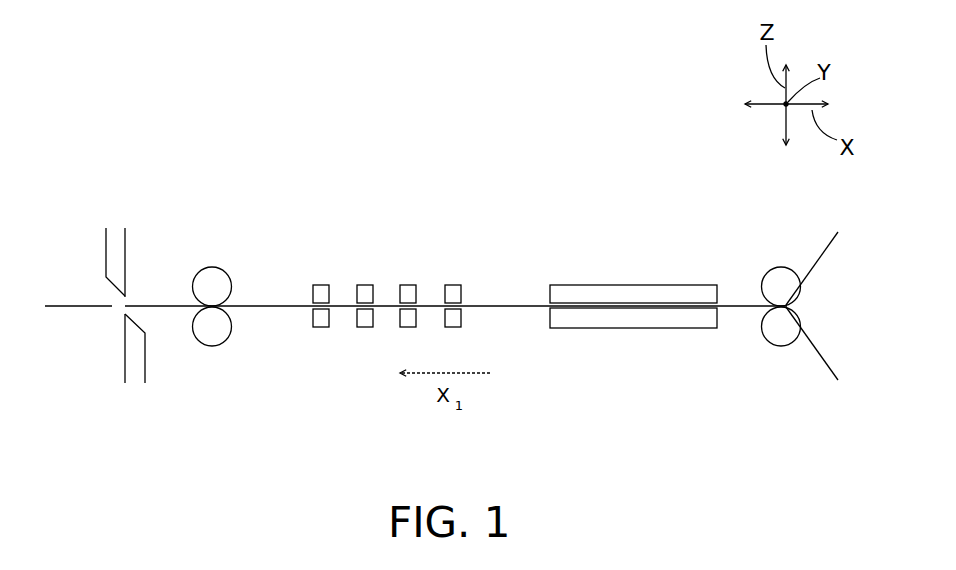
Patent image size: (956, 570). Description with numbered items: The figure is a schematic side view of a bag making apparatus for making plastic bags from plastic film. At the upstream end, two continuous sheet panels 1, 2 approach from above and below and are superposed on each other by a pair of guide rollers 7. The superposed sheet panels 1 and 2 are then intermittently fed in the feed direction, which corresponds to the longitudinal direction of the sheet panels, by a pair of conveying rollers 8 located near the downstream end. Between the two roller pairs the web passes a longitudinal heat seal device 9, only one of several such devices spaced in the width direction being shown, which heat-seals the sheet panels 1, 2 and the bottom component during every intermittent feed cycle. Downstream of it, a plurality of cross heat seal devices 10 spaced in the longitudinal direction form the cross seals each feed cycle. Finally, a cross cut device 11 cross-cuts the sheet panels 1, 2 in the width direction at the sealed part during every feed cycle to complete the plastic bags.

The sheet panel 1 is at (823, 253).
The sheet panel 2 is at (823, 362).
The guide rollers 7 is at (760, 337).
The conveying rollers 8 is at (205, 352).
The longitudinal heat seal device 9 is at (622, 283).
The cross heat seal devices 10 is at (322, 283).
The cross cut device 11 is at (117, 225).